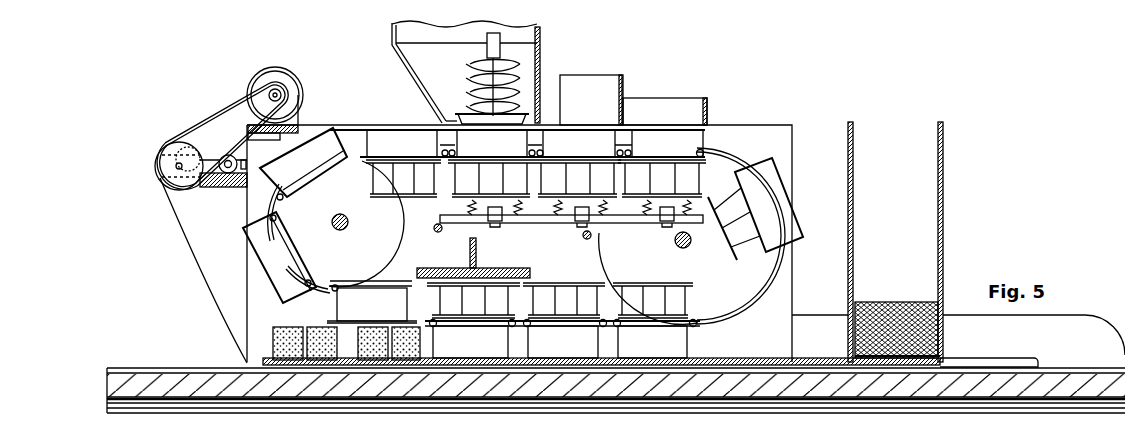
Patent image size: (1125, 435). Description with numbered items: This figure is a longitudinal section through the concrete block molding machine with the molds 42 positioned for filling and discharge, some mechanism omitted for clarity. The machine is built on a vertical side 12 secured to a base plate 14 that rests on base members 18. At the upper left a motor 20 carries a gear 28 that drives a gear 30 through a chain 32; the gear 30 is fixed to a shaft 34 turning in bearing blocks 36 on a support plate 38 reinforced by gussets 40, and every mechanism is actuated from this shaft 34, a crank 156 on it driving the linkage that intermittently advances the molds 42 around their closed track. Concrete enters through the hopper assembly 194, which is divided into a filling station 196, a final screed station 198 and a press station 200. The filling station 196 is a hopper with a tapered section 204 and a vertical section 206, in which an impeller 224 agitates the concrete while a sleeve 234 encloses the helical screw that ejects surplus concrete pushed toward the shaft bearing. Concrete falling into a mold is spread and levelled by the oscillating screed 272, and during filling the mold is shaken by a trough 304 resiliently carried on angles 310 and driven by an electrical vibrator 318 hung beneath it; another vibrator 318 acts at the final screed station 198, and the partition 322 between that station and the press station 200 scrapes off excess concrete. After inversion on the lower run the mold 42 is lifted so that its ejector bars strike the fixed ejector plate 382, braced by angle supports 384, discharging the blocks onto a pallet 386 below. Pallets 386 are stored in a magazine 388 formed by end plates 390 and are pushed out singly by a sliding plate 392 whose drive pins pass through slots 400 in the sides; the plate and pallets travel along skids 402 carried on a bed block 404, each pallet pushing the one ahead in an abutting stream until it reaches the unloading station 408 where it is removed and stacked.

The vertical side 12 is at (755, 125).
The base plate 14 is at (810, 402).
The base member 18 is at (883, 405).
The motor 20 is at (300, 90).
The gear 28 is at (267, 90).
The gear 30 is at (177, 150).
The chain 32 is at (230, 105).
The shaft 34 is at (177, 165).
The bearing block 36 is at (194, 148).
The support plate 38 is at (203, 187).
The gusset 40 is at (175, 238).
The mold 42 is at (692, 150).
The crank 156 is at (223, 170).
The hopper assembly 194 is at (545, 50).
The filling station 196 is at (458, 104).
The final screed station 198 is at (621, 85).
The press station 200 is at (683, 112).
The tapered section 204 is at (399, 64).
The vertical section 206 is at (392, 37).
The impeller 224 is at (475, 82).
The sleeve 234 is at (487, 37).
The screed 272 is at (522, 110).
The trough 304 is at (453, 186).
The angle 310 is at (535, 217).
The electrical vibrator 318 is at (493, 214).
The partition 322 is at (625, 112).
The ejector plate 382 is at (517, 275).
The angle support 384 is at (477, 255).
The pallet 386 is at (872, 300).
The magazine 388 is at (922, 178).
The end plate 390 is at (938, 160).
The sliding plate 392 is at (947, 347).
The slot 400 is at (1003, 357).
The skid 402 is at (1067, 363).
The bed block 404 is at (1033, 392).
The unloading station 408 is at (172, 365).